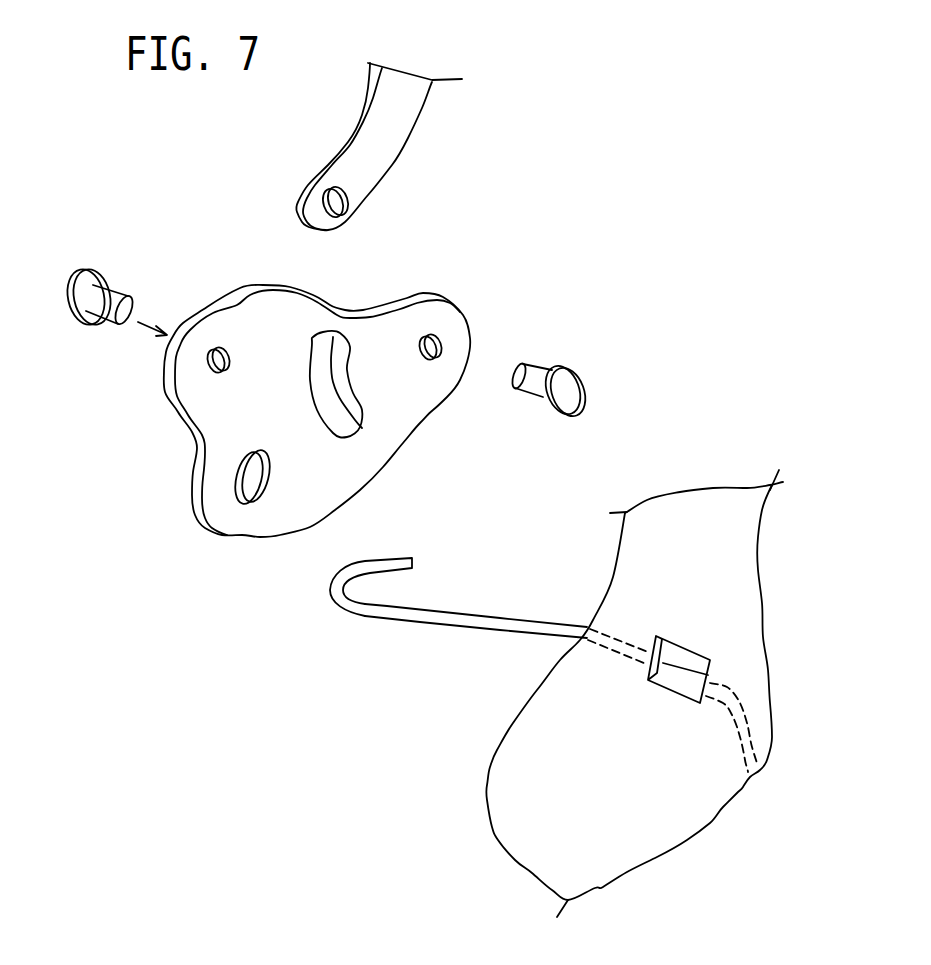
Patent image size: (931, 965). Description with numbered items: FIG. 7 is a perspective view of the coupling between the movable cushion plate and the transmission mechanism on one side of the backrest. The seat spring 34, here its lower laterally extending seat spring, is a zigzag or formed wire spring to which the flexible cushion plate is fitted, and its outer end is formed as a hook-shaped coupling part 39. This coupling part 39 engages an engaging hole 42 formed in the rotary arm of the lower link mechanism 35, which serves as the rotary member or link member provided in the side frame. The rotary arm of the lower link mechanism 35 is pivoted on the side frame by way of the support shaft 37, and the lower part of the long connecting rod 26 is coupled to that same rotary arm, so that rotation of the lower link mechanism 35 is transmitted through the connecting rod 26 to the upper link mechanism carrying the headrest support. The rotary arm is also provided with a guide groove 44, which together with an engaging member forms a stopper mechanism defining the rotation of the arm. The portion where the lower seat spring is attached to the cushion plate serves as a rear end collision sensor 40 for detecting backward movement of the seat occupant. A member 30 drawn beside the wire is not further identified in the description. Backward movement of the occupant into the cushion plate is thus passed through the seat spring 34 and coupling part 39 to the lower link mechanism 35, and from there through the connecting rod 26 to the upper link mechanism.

The connecting rod 26 is at (397, 133).
The lower link mechanism 35 is at (317, 420).
The guide groove 44 is at (331, 350).
The support shaft 37 is at (565, 368).
The hook-shaped coupling part 39 is at (367, 562).
The seat spring 34 is at (543, 633).
The body 30 is at (584, 693).
The rear end collision sensor 40 is at (713, 716).
The engaging hole 42 is at (252, 480).